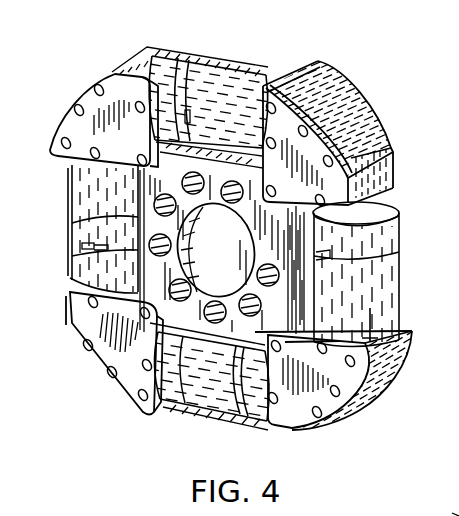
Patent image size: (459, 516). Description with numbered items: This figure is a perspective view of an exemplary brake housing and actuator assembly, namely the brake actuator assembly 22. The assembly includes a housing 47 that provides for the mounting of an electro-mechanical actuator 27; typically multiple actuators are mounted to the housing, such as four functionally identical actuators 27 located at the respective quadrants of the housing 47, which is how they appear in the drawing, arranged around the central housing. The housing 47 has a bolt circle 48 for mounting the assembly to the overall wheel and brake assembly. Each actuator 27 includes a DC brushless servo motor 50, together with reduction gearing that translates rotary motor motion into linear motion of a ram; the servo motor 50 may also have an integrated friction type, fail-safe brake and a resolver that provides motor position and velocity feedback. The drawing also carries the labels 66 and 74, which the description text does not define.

The brake actuator assembly 22 is at (96, 60).
The electro-mechanical actuator 27 is at (83, 106).
The housing 47 is at (148, 220).
The bolt circle 48 is at (190, 332).
The DC brushless servo motor 50 is at (242, 60).
The curved cover 66 is at (338, 80).
The lead 74 is at (458, 515).